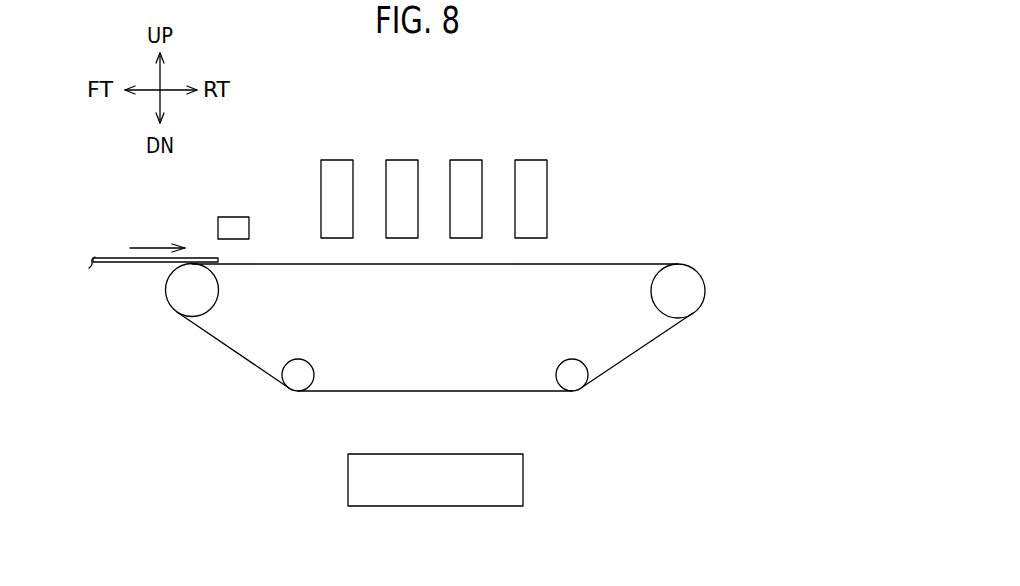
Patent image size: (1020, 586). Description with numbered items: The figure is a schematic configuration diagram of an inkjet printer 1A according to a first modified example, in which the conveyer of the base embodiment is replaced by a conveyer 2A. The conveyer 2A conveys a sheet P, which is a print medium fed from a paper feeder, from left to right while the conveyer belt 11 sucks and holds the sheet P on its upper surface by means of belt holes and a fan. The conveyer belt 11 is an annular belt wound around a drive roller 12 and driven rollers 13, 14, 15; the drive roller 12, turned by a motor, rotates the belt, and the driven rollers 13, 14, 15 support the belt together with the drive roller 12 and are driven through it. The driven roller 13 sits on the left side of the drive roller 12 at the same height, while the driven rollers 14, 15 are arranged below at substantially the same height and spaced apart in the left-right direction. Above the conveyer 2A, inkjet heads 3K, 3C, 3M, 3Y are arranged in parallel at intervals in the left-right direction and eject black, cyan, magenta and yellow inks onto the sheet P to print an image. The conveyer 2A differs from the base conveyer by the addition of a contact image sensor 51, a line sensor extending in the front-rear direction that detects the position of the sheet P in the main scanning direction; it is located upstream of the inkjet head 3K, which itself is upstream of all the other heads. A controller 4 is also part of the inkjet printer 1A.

The inkjet printer 1A is at (655, 125).
The conveyer 2A is at (675, 373).
The inkjet head 3K is at (335, 160).
The inkjet head 3C is at (400, 160).
The inkjet head 3M is at (465, 160).
The inkjet head 3Y is at (530, 160).
The controller 4 is at (523, 483).
The conveyer belt 11 is at (610, 263).
The drive roller 12 is at (705, 291).
The driven roller 13 is at (166, 289).
The driven roller 14 is at (298, 392).
The driven roller 15 is at (572, 392).
The contact image sensor 51 is at (234, 217).
The sheet P is at (113, 257).